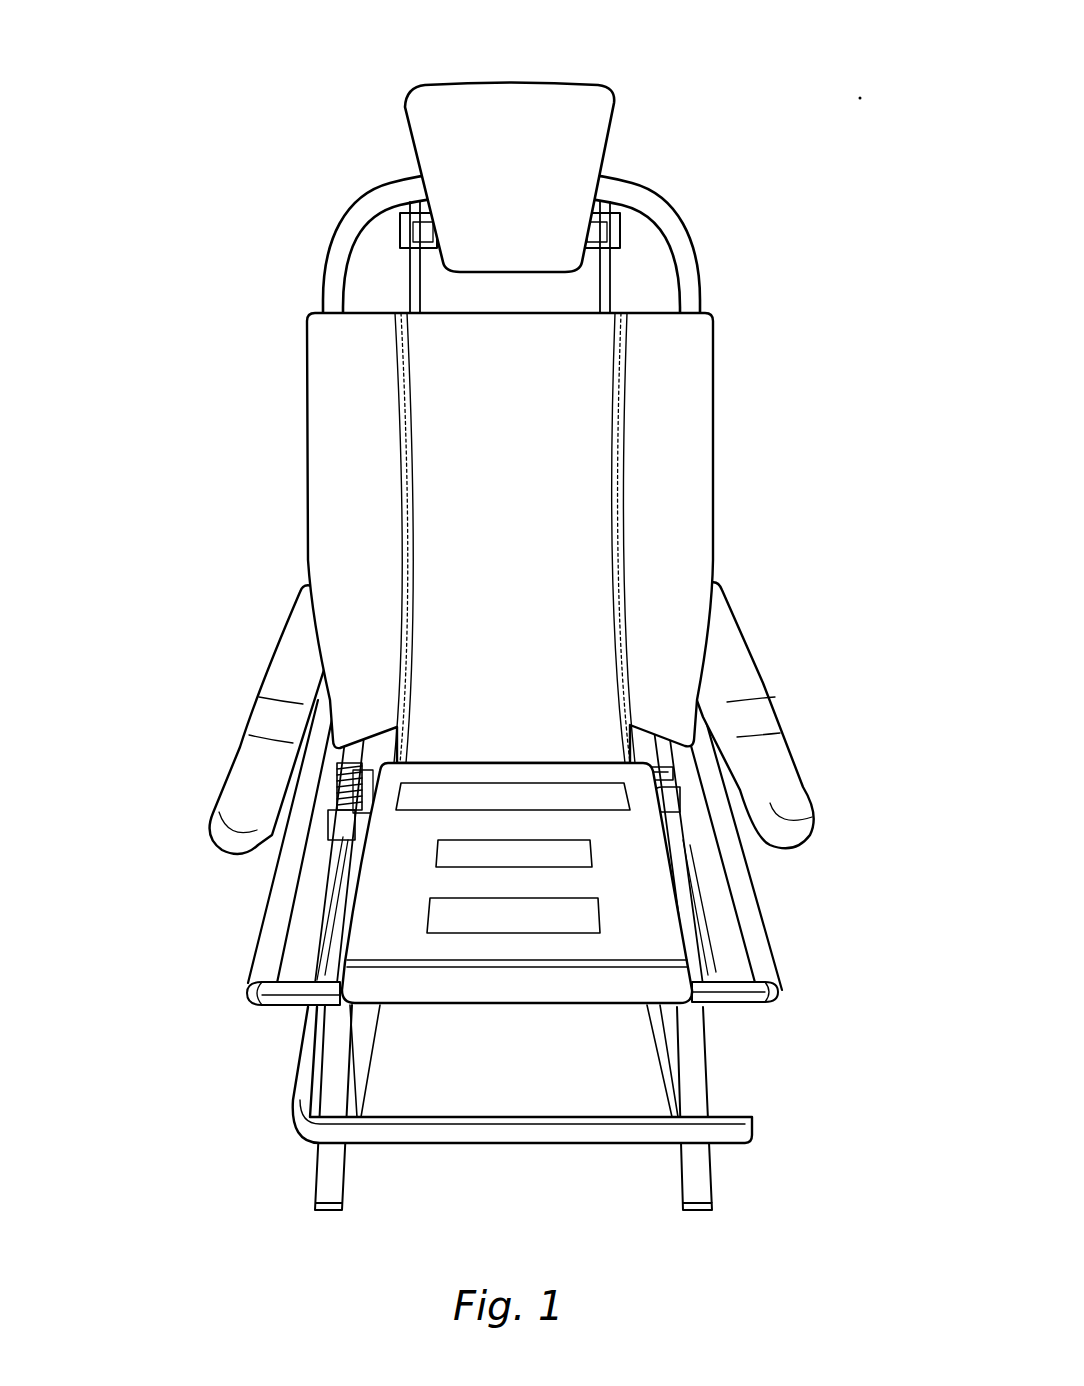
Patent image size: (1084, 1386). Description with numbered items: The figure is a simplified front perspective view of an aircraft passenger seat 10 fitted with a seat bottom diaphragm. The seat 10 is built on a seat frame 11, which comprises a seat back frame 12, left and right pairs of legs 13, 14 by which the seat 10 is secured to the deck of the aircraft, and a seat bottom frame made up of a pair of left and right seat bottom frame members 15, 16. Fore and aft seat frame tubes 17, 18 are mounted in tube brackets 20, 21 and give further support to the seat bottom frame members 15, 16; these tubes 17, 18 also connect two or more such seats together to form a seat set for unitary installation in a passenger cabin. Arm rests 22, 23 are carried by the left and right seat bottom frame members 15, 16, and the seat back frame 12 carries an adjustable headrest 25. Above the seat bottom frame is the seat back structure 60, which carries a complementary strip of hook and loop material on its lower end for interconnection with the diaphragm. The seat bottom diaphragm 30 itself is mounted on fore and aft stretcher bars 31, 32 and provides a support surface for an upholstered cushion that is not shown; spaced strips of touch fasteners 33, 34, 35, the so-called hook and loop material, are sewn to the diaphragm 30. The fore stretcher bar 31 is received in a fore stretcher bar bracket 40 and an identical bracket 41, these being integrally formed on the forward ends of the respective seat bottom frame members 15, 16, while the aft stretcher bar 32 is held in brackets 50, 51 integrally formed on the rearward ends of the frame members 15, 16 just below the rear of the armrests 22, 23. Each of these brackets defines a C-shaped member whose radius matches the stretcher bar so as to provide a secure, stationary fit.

The aircraft passenger seat 10 is at (300, 132).
The seat frame 11 is at (668, 222).
The seat back frame 12 is at (348, 230).
The left pair of legs 13 is at (343, 1077).
The right pair of legs 14 is at (690, 1075).
The left seat bottom frame member 15 is at (303, 843).
The right seat bottom frame member 16 is at (742, 903).
The fore seat frame tube 17 is at (698, 1007).
The aft seat frame tube 18 is at (673, 807).
The tube bracket 20 is at (350, 867).
The tube bracket 21 is at (705, 975).
The left arm rest 22 is at (290, 672).
The right arm rest 23 is at (723, 638).
The adjustable headrest 25 is at (543, 150).
The seat bottom diaphragm 30 is at (517, 989).
The fore stretcher bar 31 is at (738, 992).
The aft stretcher bar 32 is at (653, 713).
The strip of touch fastener 33 is at (527, 920).
The strip of touch fastener 34 is at (480, 853).
The strip of touch fastener 35 is at (460, 793).
The fore stretcher bar bracket 40 is at (247, 997).
The fore stretcher bar bracket 41 is at (780, 990).
The aft stretcher bar bracket 50 is at (340, 780).
The aft stretcher bar bracket 51 is at (680, 762).
The seat back structure 60 is at (471, 499).